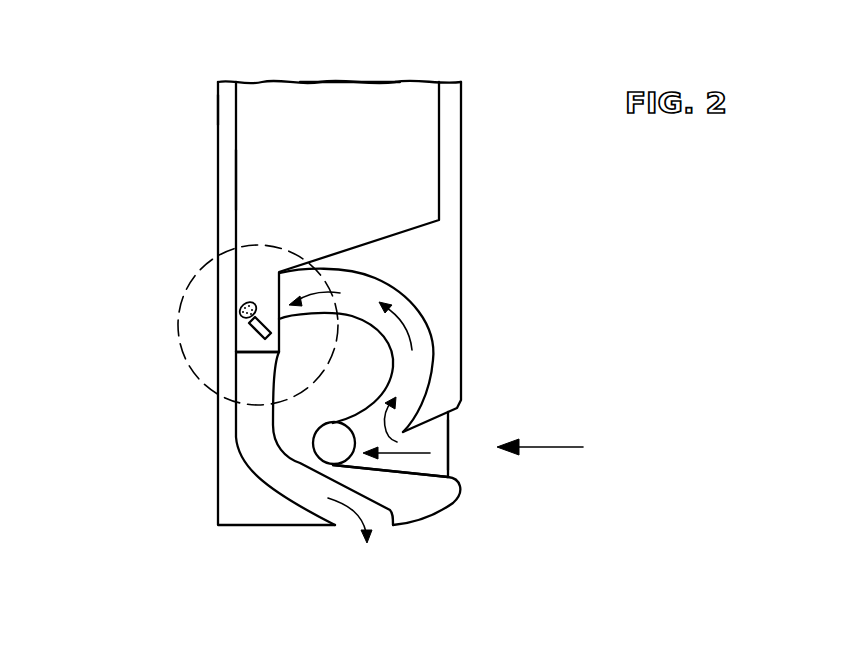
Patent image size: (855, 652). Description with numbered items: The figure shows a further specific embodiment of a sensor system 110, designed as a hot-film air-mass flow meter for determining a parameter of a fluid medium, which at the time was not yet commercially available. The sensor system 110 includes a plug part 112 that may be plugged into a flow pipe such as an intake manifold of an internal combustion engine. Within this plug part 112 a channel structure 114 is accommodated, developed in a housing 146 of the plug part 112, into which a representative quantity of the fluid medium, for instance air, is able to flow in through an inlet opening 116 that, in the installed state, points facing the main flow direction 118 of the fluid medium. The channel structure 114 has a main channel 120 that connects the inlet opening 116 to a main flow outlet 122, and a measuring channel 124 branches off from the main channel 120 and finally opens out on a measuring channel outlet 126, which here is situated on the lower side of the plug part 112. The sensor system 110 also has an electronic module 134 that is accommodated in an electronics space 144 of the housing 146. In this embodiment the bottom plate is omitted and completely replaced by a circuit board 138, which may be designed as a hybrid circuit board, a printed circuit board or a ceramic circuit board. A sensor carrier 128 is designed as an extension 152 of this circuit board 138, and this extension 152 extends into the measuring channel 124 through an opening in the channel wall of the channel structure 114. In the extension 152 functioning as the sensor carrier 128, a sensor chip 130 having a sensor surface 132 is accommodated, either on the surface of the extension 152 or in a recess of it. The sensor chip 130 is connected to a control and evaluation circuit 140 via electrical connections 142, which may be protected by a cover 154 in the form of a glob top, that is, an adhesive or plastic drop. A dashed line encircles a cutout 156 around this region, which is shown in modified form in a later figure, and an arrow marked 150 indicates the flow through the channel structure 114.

The sensor system 110 is at (503, 107).
The plug part 112 is at (425, 303).
The channel structure 114 is at (250, 453).
The inlet opening 116 is at (464, 457).
The main flow direction 118 is at (545, 447).
The main channel 120 is at (395, 463).
The main flow outlet 122 is at (325, 452).
The measuring channel 124 is at (432, 348).
The measuring channel outlet 126 is at (343, 527).
The sensor carrier 128 is at (147, 371).
The sensor chip 130 is at (156, 291).
The sensor surface 132 is at (240, 337).
The electronic module 134 is at (262, 110).
The circuit board 138 is at (173, 108).
The control and evaluation circuit 140 is at (378, 115).
The electrical connections 142 is at (150, 282).
The electronics space 144 is at (236, 180).
The housing 146 is at (453, 192).
The flow path 150 is at (280, 320).
The extension 152 is at (257, 345).
The cover 154 is at (243, 302).
The cutout 156 is at (205, 383).